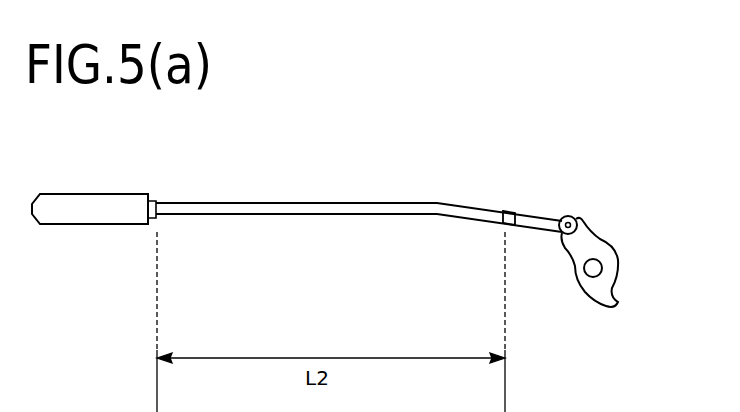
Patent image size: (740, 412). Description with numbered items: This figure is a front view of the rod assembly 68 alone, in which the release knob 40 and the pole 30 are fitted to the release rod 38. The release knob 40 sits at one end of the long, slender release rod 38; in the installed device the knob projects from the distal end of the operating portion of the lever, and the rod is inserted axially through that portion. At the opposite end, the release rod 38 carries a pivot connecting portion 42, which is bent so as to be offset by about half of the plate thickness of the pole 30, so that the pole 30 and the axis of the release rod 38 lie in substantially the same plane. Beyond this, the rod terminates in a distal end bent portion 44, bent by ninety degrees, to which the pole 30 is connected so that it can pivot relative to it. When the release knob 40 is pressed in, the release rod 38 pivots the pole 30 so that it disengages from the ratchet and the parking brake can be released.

The rod assembly 68 is at (482, 170).
The release knob 40 is at (93, 210).
The release rod 38 is at (283, 213).
The pivot connecting portion 42 is at (530, 214).
The distal end bent portion 44 is at (581, 217).
The pole 30 is at (583, 280).